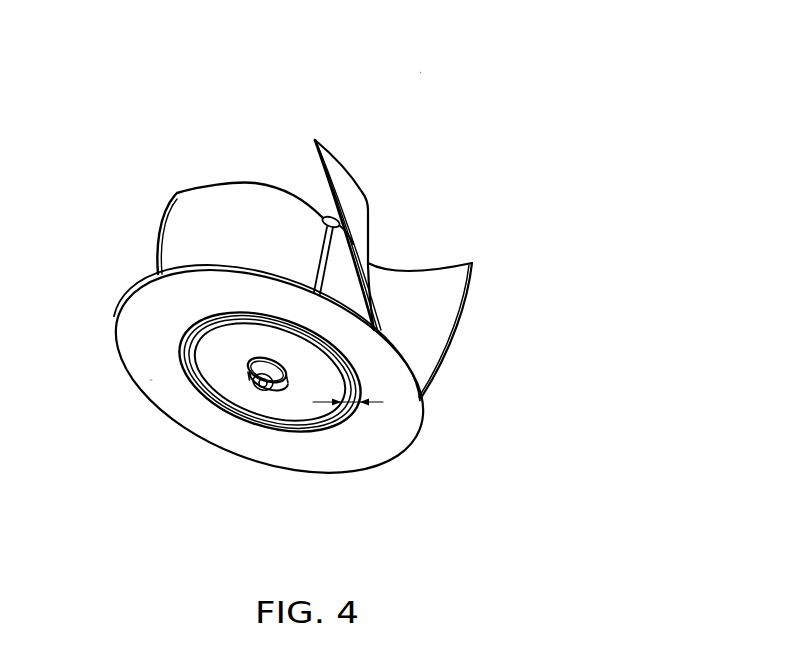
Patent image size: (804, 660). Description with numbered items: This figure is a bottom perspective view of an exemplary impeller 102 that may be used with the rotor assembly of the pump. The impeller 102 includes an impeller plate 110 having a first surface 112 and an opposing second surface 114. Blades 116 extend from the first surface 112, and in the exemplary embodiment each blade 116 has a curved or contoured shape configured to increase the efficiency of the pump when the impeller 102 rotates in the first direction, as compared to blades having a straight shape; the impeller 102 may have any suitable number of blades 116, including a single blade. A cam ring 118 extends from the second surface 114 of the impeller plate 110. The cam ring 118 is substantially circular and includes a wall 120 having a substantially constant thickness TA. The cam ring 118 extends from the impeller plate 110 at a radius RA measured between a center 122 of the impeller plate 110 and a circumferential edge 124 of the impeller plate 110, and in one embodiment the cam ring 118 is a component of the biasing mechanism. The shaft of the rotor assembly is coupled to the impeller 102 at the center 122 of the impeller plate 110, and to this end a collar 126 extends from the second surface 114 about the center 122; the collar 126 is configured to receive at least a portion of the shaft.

The impeller 102 is at (425, 68).
The impeller plate 110 is at (408, 440).
The first surface 112 is at (218, 263).
The second surface 114 is at (247, 377).
The blades 116 is at (420, 318).
The cam ring 118 is at (328, 425).
The wall 120 is at (335, 362).
The center 122 is at (220, 400).
The circumferential edge 124 is at (430, 410).
The collar 126 is at (195, 320).
The radius RA is at (250, 379).
The thickness TA is at (322, 402).